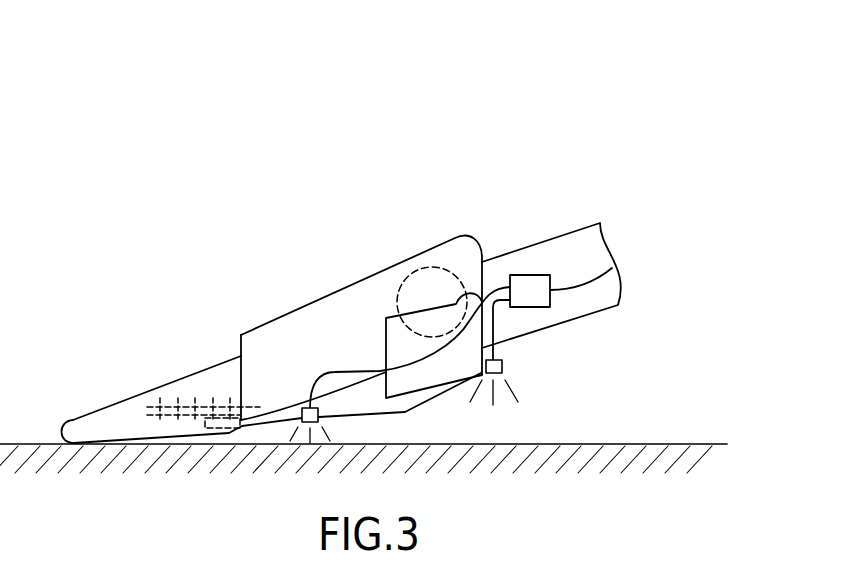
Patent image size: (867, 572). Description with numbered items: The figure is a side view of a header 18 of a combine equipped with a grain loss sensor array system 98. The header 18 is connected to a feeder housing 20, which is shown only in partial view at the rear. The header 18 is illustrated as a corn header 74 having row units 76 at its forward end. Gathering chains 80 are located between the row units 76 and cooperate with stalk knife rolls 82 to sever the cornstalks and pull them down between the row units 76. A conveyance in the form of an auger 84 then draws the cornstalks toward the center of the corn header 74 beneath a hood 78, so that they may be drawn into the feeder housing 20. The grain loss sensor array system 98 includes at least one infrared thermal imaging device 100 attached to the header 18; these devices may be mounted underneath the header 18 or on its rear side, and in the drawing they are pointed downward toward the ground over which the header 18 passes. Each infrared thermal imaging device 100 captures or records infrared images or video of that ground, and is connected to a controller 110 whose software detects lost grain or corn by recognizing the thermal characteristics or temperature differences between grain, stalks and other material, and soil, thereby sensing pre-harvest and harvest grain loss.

The grain loss sensor array system 98 is at (653, 81).
The header 18 is at (347, 260).
The feeder housing 20 is at (563, 236).
The corn header 74 is at (300, 302).
The row units 76 is at (130, 397).
The hood 78 is at (464, 236).
The gathering chains 80 is at (170, 406).
The stalk knife rolls 82 is at (218, 430).
The auger 84 is at (427, 267).
The infrared thermal imaging device 100 is at (318, 413).
The controller 110 is at (530, 275).